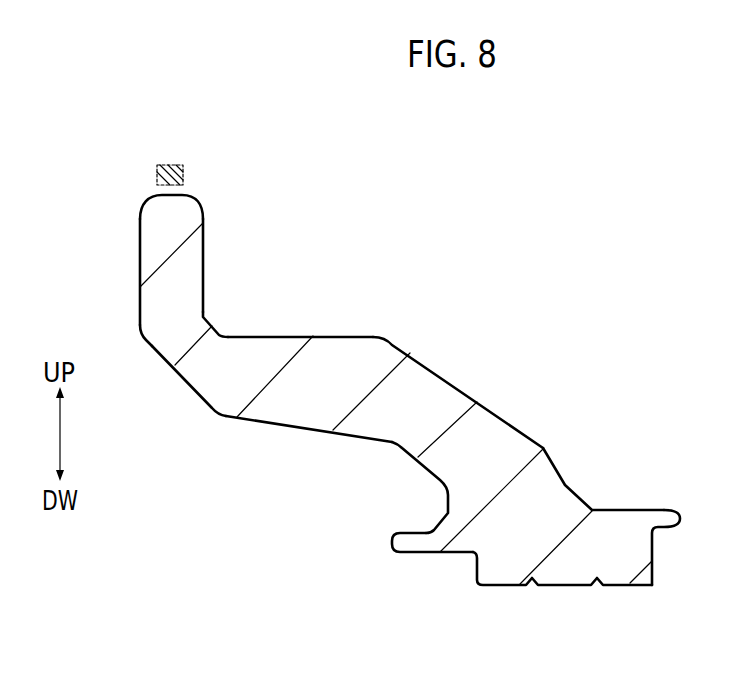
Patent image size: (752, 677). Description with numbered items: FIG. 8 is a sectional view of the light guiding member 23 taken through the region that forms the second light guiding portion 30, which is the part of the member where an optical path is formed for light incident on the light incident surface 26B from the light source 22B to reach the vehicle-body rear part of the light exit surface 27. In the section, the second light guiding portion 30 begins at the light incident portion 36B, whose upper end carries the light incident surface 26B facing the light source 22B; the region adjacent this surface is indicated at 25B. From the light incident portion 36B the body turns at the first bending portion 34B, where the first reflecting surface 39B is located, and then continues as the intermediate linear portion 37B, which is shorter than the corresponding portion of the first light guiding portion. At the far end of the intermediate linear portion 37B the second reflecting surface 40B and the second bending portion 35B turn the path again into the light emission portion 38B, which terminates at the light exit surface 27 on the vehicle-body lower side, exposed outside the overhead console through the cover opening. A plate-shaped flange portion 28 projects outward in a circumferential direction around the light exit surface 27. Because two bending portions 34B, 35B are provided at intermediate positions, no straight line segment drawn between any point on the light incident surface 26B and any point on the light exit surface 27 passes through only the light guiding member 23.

The light guiding member 23 is at (383, 375).
The second light guiding portion 30 is at (383, 375).
The light source 22B is at (175, 165).
The upper end surface 25B is at (165, 193).
The light incident surface 26B is at (185, 194).
The light incident portion 36B is at (170, 277).
The first reflecting surface 39B is at (165, 357).
The first bending portion 34B is at (198, 348).
The intermediate linear portion 37B is at (308, 390).
The second reflecting surface 40B is at (490, 404).
The second bending portion 35B is at (458, 437).
The light emission portion 38B is at (528, 515).
The flange portion 28 is at (422, 543).
The light exit surface 27 is at (562, 587).